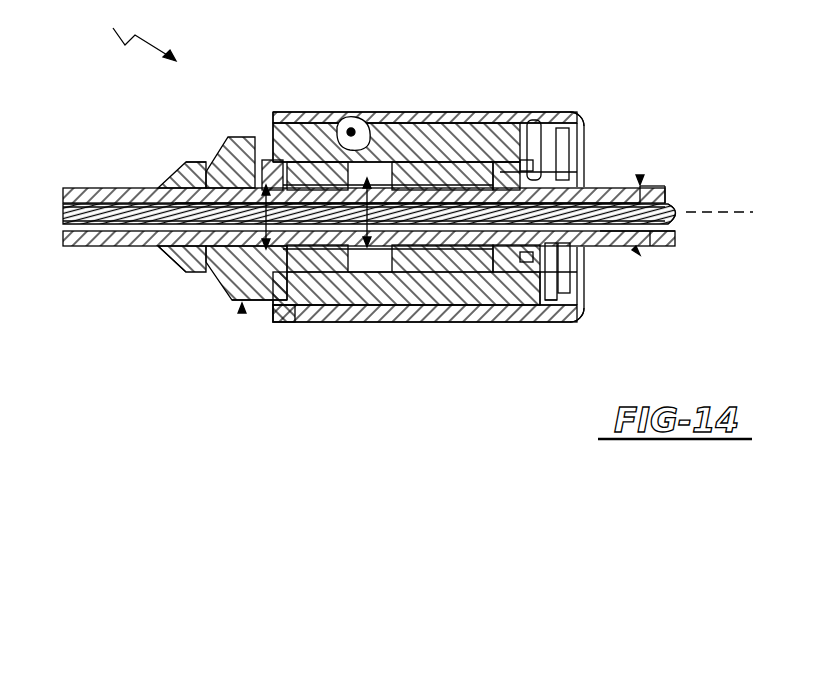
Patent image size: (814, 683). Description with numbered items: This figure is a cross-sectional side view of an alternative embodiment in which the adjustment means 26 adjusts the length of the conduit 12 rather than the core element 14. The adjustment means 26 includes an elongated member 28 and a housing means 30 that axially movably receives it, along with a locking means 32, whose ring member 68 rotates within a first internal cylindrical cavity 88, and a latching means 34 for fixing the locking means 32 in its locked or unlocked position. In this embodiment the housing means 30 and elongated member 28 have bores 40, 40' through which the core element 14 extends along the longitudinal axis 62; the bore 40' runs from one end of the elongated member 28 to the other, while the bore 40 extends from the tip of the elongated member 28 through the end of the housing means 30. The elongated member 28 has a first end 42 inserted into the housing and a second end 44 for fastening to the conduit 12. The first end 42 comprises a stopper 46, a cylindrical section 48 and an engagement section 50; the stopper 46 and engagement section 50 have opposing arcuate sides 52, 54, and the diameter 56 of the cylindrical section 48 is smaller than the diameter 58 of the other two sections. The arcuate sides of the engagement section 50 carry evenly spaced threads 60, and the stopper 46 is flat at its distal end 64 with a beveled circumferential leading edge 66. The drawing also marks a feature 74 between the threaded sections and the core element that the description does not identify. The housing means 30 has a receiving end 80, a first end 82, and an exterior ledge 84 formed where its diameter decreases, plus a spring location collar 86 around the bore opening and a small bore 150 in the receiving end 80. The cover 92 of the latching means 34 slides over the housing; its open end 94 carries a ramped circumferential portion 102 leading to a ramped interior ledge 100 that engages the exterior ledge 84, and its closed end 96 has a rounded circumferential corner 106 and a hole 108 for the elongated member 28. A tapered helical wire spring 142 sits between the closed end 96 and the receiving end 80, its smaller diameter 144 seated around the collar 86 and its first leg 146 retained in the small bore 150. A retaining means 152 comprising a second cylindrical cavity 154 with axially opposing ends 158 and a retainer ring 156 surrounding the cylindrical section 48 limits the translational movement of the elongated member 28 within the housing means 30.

The conduit 12 is at (662, 188).
The core element 14 is at (680, 204).
The adjustment means 26 is at (136, 30).
The elongated member 28 is at (632, 250).
The housing means 30 is at (242, 306).
The locking means 32 is at (482, 120).
The latching means 34 is at (568, 322).
The bore 40 is at (369, 267).
The bore 40' is at (698, 239).
The first end 42 is at (172, 188).
The second end 44 is at (668, 185).
The stopper 46 is at (205, 160).
The cylindrical section 48 is at (252, 150).
The engagement section 50 is at (396, 162).
The arcuate side 52 is at (466, 162).
The arcuate side 54 is at (425, 275).
The diameter 56 is at (269, 194).
The diameter 58 is at (350, 325).
The threads 60 is at (504, 150).
The longitudinal axis 62 is at (722, 212).
The distal end 64 is at (182, 262).
The beveled circumferential leading edge 66 is at (206, 278).
The ring member 68 is at (398, 322).
The clearance 74 is at (432, 115).
The receiving end 80 is at (538, 300).
The first end 82 is at (232, 137).
The exterior ledge 84 is at (336, 125).
The spring location collar 86 is at (565, 172).
The first internal cylindrical cavity 88 is at (458, 322).
The cover 92 is at (585, 112).
The open end 94 is at (245, 135).
The closed end 96 is at (585, 280).
The ramped interior ledge 100 is at (372, 135).
The ramped circumferential portion 102 is at (286, 120).
The rounded circumferential corner 106 is at (583, 318).
The hole 108 is at (640, 183).
The tapered helical wire spring 142 is at (600, 278).
The smaller diameter 144 is at (560, 305).
The first leg 146 is at (548, 305).
The small bore 150 is at (538, 122).
The retaining means 152 is at (252, 305).
The second cylindrical cavity 154 is at (290, 322).
The retainer ring 156 is at (309, 122).
The axially opposing ends 158 is at (330, 300).